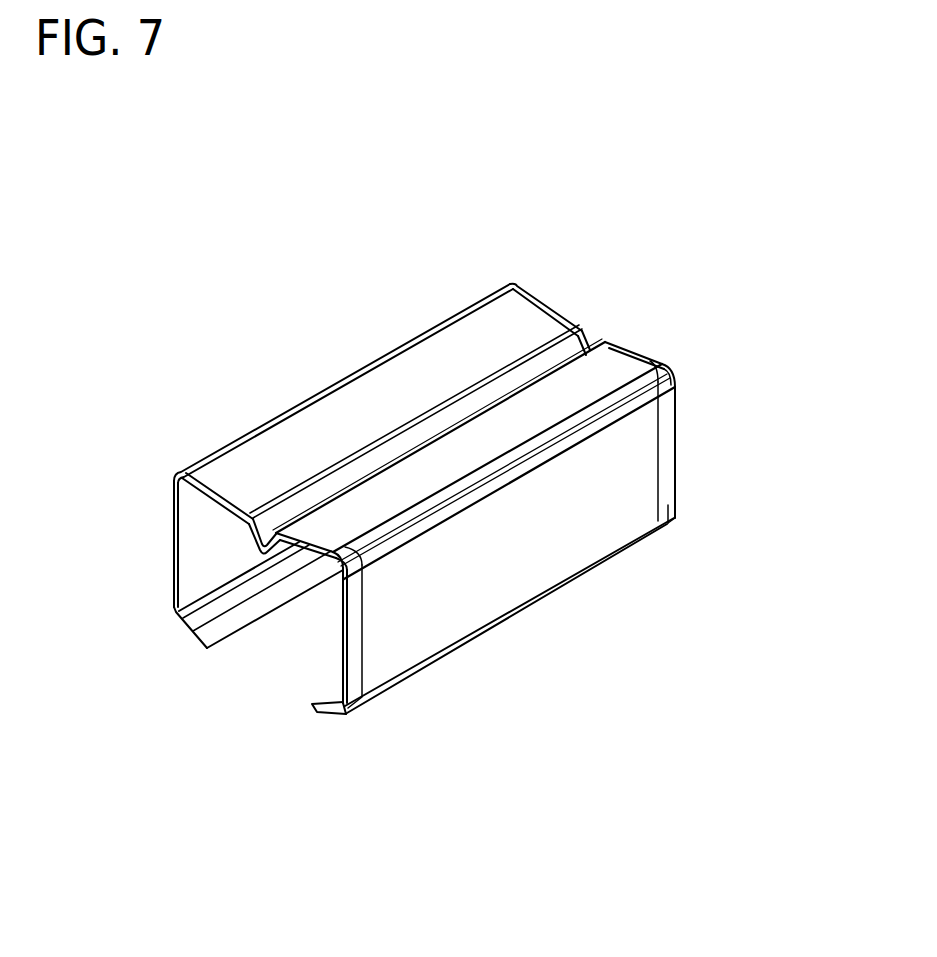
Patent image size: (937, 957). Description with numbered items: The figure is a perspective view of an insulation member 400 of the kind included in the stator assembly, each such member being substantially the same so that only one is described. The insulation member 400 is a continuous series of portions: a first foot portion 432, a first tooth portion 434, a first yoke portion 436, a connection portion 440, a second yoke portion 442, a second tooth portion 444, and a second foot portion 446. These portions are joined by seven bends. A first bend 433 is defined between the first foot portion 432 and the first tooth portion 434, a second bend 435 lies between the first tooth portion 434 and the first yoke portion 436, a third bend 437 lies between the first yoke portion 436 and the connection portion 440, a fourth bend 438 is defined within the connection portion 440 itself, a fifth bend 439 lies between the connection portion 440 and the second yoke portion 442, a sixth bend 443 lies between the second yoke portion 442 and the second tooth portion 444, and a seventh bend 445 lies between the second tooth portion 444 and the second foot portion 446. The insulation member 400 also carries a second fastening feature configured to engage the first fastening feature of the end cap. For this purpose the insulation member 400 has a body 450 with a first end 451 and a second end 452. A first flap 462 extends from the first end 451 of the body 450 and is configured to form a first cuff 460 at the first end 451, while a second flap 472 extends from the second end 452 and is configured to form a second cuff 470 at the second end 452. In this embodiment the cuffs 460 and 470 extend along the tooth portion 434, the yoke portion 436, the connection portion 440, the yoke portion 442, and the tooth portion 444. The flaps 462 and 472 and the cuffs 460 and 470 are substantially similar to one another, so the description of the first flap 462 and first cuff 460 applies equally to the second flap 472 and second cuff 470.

The insulation member 400 is at (224, 298).
The first foot portion 432 is at (203, 630).
The first bend 433 is at (180, 613).
The first tooth portion 434 is at (195, 557).
The second bend 435 is at (178, 468).
The first yoke portion 436 is at (458, 343).
The third bend 437 is at (250, 516).
The fourth bend 438 is at (262, 556).
The fifth bend 439 is at (275, 528).
The connection portion 440 is at (230, 537).
The second yoke portion 442 is at (599, 368).
The sixth bend 443 is at (343, 580).
The second tooth portion 444 is at (636, 462).
The seventh bend 445 is at (345, 712).
The second foot portion 446 is at (317, 702).
The body 450 is at (380, 341).
The first end 451 is at (160, 478).
The second end 452 is at (690, 355).
The first cuff 460 is at (378, 633).
The first flap 462 is at (353, 667).
The second cuff 470 is at (645, 505).
The second flap 472 is at (667, 527).